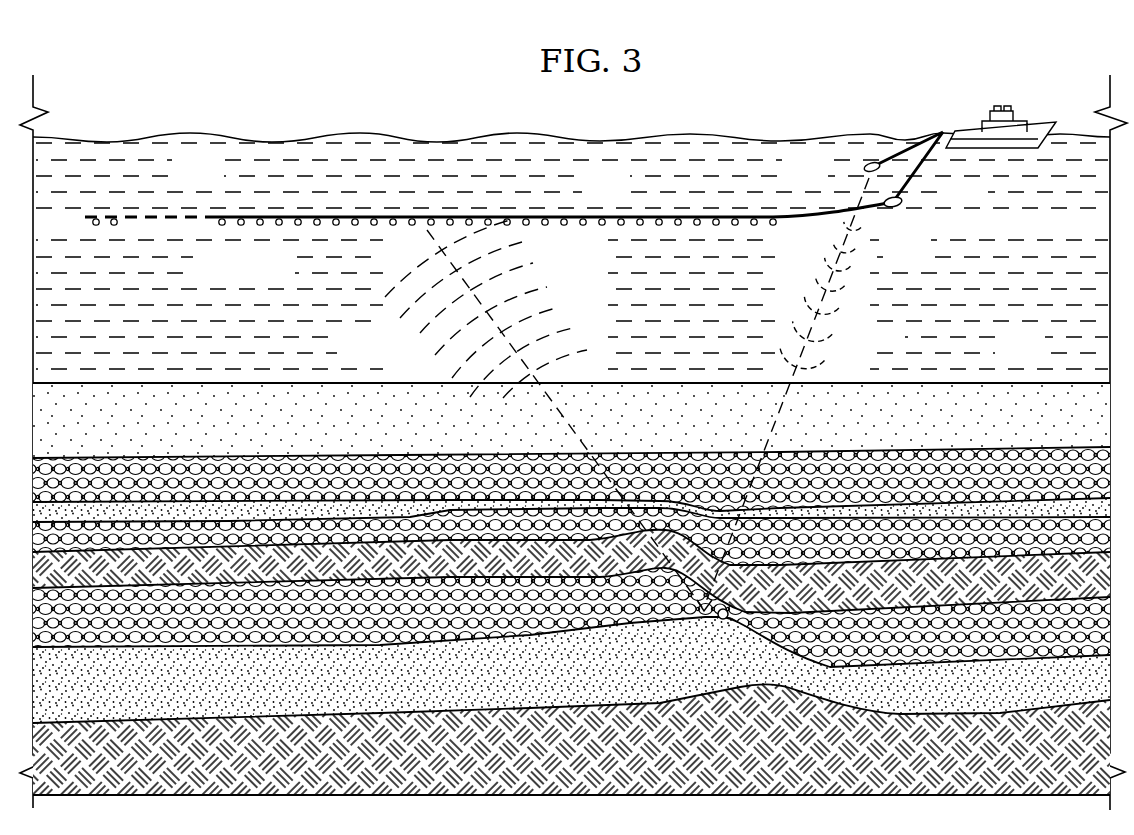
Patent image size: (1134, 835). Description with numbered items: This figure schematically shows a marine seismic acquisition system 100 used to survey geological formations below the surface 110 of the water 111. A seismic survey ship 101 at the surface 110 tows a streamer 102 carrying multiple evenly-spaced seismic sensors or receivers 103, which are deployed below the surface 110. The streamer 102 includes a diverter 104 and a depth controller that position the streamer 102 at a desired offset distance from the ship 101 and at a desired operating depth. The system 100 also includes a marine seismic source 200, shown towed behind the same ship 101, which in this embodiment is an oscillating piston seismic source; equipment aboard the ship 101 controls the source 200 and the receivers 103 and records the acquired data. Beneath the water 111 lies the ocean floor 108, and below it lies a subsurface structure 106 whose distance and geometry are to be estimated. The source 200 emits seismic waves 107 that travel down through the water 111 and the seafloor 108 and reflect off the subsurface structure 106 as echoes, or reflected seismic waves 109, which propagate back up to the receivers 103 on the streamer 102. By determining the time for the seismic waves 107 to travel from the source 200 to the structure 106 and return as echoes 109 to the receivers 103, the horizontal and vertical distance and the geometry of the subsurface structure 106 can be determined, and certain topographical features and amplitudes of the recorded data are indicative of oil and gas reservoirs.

The marine seismic acquisition system 100 is at (412, 78).
The seismic survey ship 101 is at (977, 121).
The streamer 102 is at (922, 170).
The seismic sensors or receivers 103 is at (220, 228).
The diverter 104 is at (897, 208).
The subsurface structure 106 is at (721, 621).
The seismic waves 107 is at (818, 312).
The ocean floor 108 is at (1004, 382).
The reflected seismic waves 109 is at (417, 336).
The water surface 110 is at (594, 142).
The water 111 is at (217, 180).
The marine seismic source 200 is at (866, 167).